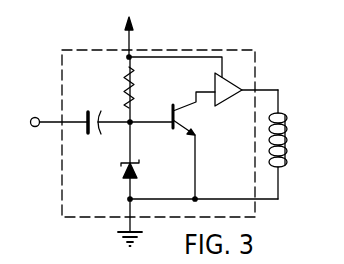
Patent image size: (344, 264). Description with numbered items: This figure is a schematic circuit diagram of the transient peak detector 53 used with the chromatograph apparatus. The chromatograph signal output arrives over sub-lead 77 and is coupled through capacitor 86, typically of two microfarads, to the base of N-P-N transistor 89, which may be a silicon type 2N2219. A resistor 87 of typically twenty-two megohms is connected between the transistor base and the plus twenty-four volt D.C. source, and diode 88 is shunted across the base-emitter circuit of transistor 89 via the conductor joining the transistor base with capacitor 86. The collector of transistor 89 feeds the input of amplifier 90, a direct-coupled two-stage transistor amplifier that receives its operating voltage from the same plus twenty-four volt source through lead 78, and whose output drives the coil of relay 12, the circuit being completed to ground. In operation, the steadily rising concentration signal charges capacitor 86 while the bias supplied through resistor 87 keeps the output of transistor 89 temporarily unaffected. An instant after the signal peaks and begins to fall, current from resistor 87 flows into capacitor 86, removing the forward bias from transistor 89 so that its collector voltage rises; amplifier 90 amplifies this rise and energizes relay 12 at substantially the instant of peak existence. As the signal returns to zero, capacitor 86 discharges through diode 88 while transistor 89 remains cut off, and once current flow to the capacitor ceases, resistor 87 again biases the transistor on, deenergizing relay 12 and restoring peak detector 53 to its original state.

The peak detector 53 is at (257, 57).
The lead 78 is at (190, 57).
The sub-lead 77 is at (55, 124).
The capacitor 86 is at (86, 134).
The resistor 87 is at (126, 86).
The diode 88 is at (121, 164).
The N-P-N transistor 89 is at (172, 107).
The amplifier 90 is at (232, 98).
The relay 12 is at (287, 150).